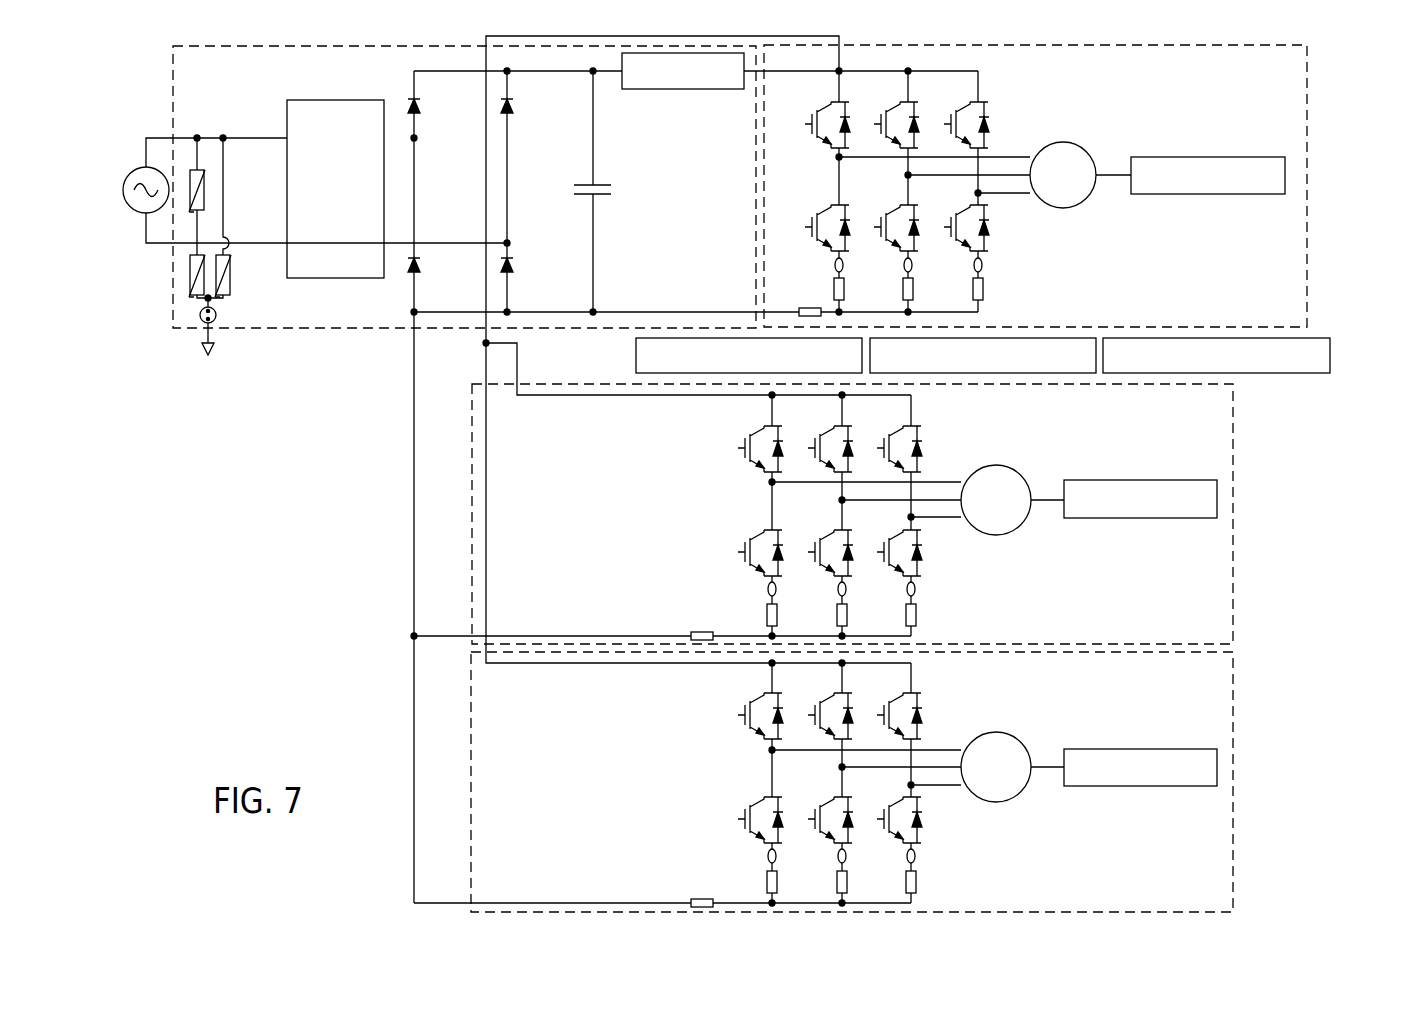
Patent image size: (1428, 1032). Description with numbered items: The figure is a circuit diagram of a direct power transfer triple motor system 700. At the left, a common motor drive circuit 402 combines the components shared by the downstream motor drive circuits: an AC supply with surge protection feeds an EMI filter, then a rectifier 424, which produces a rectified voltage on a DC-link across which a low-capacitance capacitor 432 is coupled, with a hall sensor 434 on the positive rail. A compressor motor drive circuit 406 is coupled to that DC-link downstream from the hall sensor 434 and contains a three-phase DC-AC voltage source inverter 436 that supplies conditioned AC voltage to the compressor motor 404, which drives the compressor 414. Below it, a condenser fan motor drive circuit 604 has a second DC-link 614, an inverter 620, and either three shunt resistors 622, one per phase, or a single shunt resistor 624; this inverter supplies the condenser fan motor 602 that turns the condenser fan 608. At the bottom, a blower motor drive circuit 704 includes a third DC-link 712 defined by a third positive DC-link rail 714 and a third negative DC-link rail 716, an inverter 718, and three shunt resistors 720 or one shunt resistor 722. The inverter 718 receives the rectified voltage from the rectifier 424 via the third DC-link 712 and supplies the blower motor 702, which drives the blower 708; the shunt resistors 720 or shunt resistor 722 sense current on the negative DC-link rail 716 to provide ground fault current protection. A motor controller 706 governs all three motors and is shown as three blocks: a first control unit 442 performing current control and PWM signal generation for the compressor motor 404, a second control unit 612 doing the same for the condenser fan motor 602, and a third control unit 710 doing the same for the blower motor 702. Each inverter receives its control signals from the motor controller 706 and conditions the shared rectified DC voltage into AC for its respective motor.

The direct power transfer (DPT) triple motor system 700 is at (278, 527).
The common motor drive circuit 402 is at (222, 46).
The rectifier 424 is at (410, 94).
The low-capacitance capacitor 432 is at (600, 185).
The hall sensor 434 is at (650, 89).
The inverter 436 is at (1004, 114).
The compressor motor 404 is at (1063, 142).
The compressor 414 is at (1183, 157).
The compressor motor drive circuit 406 is at (1307, 137).
The first control unit 442 is at (636, 352).
The second control unit 612 is at (1043, 338).
The motor controller 706 is at (1325, 324).
The third control unit 710 is at (1330, 355).
The condenser fan motor drive circuit 604 is at (1233, 467).
The inverter 620 is at (925, 416).
The condenser fan motor 602 is at (996, 465).
The condenser fan 608 is at (1105, 480).
The second DC-link 614 is at (672, 616).
The shunt resistors 622 is at (776, 612).
The shunt resistor 624 is at (700, 631).
The blower motor drive circuit 704 is at (1233, 727).
The inverter 718 is at (925, 684).
The blower motor 702 is at (996, 732).
The blower 708 is at (1105, 749).
The third positive DC-link rail 714 is at (518, 663).
The third DC-link 712 is at (629, 885).
The third negative DC-link rail 716 is at (525, 903).
The shunt resistors 720 is at (776, 880).
The shunt resistor 722 is at (700, 899).